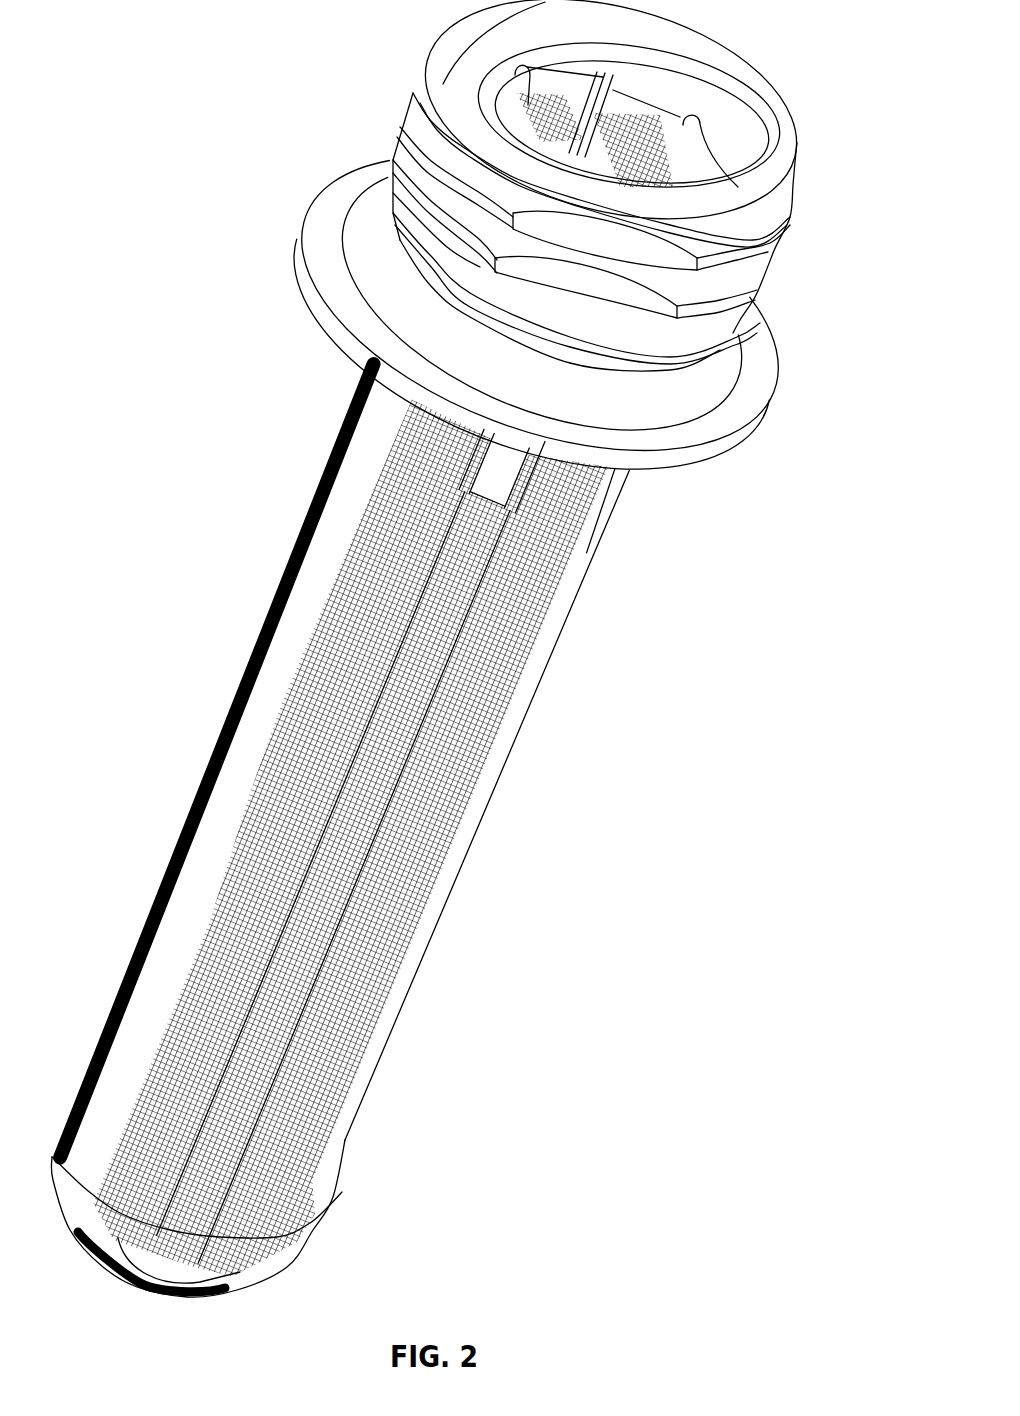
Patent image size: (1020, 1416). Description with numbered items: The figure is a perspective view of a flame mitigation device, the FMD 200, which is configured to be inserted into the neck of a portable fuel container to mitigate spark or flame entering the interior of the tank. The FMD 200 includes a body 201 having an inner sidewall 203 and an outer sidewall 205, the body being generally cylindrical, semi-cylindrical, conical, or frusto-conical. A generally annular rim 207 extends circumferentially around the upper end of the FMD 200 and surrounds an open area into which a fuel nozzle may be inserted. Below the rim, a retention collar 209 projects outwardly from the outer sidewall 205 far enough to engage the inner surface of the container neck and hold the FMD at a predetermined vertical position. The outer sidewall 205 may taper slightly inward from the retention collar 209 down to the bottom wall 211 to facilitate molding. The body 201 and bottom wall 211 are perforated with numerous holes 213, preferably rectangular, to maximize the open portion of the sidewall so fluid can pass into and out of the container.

The FMD 200 is at (462, 670).
The body 201 is at (462, 670).
The inner sidewall 203 is at (641, 130).
The outer sidewall 205 is at (190, 868).
The annular rim 207 is at (762, 197).
The retention collar 209 is at (763, 368).
The bottom wall 211 is at (146, 1283).
The holes 213 is at (385, 917).